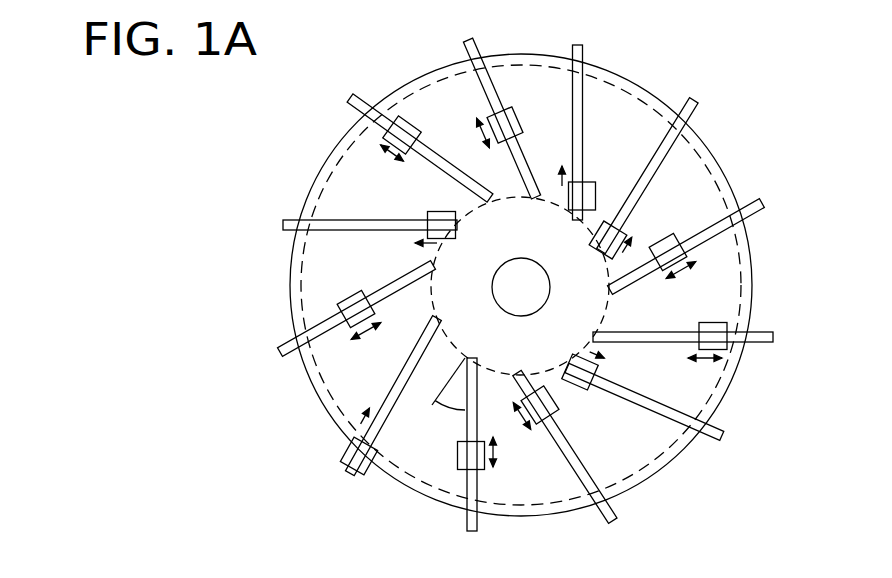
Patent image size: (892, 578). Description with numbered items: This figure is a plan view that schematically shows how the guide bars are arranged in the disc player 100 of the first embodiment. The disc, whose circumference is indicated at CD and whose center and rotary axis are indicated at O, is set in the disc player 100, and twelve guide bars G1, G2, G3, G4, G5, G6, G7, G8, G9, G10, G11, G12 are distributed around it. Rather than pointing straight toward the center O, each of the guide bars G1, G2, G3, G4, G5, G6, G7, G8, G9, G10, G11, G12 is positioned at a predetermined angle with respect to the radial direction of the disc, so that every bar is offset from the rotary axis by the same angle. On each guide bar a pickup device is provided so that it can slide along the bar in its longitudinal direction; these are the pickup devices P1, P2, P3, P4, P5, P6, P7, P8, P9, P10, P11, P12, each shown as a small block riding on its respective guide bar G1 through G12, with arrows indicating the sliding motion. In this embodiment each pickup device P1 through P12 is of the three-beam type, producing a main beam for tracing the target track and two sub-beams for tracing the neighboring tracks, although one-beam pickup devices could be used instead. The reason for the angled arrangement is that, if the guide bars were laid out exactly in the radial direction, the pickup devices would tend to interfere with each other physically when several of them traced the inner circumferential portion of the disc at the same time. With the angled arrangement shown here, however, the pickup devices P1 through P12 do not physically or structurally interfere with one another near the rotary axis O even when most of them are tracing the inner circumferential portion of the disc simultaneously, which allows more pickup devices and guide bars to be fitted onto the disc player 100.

The disc player 100 is at (765, 117).
The circumference of disk CD is at (640, 112).
The center of disk O is at (548, 290).
The guide bar G1 is at (766, 342).
The guide bar G2 is at (757, 209).
The guide bar G3 is at (698, 105).
The guide bar G4 is at (584, 48).
The guide bar G5 is at (476, 42).
The guide bar G6 is at (366, 86).
The guide bar G7 is at (288, 219).
The guide bar G8 is at (282, 343).
The guide bar G9 is at (352, 469).
The guide bar G10 is at (478, 528).
The guide bar G11 is at (606, 520).
The guide bar G12 is at (712, 441).
The pickup 1 P1 is at (710, 322).
The pickup 2 P2 is at (661, 244).
The pickup 3 P3 is at (606, 222).
The pickup 4 P4 is at (588, 181).
The pickup 5 P5 is at (524, 93).
The pickup 6 P6 is at (424, 108).
The pickup 7 P7 is at (433, 211).
The pickup 8 P8 is at (346, 296).
The pickup 9 P9 is at (377, 448).
The pickup 10 P10 is at (488, 470).
The pickup 11 P11 is at (558, 410).
The pickup 12 P12 is at (602, 367).